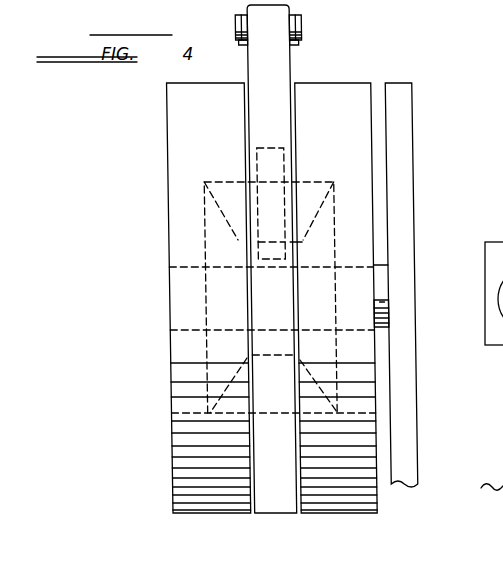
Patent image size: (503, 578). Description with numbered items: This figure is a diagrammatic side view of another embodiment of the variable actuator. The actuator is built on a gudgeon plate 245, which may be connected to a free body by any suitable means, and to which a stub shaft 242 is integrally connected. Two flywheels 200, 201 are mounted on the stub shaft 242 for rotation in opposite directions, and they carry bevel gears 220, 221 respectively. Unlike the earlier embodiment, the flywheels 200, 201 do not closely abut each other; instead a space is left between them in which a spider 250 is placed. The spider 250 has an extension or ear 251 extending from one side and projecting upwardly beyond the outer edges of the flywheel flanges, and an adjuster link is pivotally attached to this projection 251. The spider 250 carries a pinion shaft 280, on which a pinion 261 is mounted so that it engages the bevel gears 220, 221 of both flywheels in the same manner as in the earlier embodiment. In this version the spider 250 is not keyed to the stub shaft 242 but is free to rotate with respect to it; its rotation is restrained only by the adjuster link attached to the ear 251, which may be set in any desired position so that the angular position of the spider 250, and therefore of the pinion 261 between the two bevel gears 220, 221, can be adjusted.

The flywheel 200 is at (336, 92).
The flywheel 201 is at (182, 107).
The spider 250 is at (277, 128).
The extension or ear 251 is at (258, 68).
The pinion shaft 280 is at (284, 163).
The pinion 261 is at (233, 200).
The bevel gear 221 is at (238, 240).
The bevel gear 220 is at (323, 252).
The gudgeon plate 245 is at (407, 144).
The stub shaft 242 is at (379, 327).